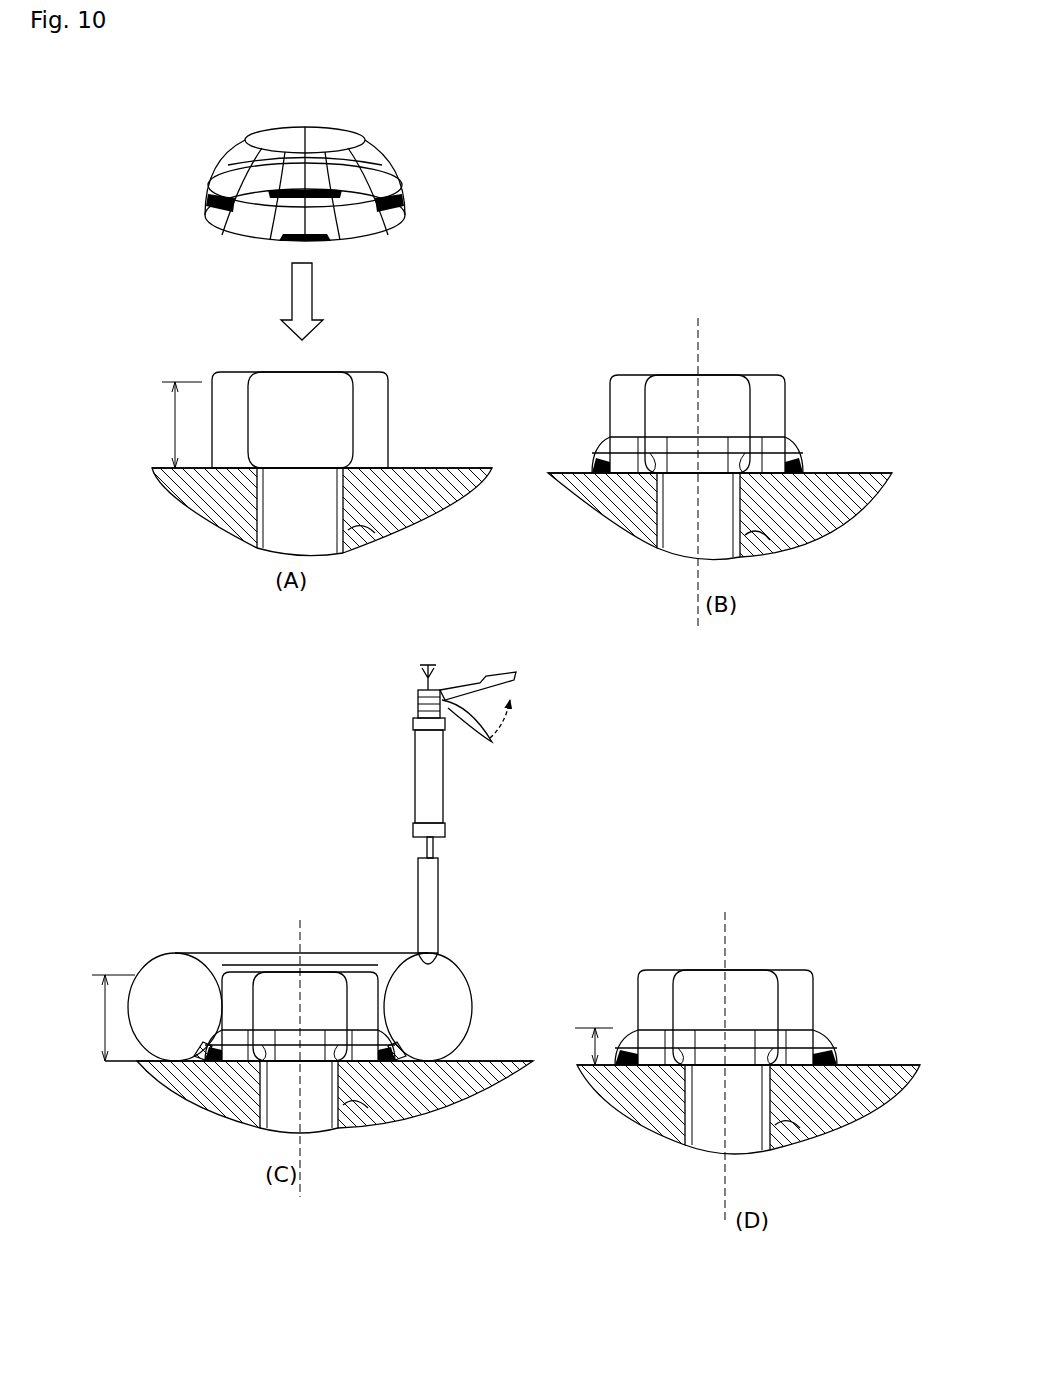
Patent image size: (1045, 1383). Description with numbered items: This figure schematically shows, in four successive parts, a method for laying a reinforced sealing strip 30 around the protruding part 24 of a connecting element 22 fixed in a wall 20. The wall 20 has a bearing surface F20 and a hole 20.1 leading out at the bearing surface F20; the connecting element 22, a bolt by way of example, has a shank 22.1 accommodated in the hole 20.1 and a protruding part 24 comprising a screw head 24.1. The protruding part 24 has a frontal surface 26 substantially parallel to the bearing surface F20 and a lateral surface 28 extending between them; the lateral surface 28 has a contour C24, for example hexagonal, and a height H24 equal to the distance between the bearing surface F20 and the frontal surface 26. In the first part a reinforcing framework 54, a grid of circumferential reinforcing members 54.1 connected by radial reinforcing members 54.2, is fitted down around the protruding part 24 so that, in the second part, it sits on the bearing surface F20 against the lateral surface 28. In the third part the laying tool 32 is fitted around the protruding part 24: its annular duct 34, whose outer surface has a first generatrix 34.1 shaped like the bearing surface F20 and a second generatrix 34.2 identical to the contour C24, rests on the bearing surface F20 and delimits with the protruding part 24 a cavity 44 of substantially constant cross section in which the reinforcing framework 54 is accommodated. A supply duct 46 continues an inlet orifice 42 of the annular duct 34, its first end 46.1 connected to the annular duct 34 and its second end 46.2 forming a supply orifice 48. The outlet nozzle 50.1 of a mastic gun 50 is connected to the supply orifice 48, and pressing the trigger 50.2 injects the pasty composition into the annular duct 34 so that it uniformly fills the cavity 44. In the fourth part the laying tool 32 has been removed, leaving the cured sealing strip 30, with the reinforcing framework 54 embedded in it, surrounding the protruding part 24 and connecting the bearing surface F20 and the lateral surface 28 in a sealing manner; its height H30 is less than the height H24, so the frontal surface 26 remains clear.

The wall 20 is at (413, 520).
The hole 20.1 is at (355, 530).
The connecting element 22 is at (268, 540).
The shank 22.1 is at (310, 522).
The protruding part 24 is at (383, 372).
The screw head 24.1 is at (220, 412).
The frontal surface 26 is at (230, 370).
The lateral surface 28 is at (212, 426).
The contour C24 is at (212, 398).
The height of the protruding part H24 is at (172, 430).
The height of the sealing strip H30 is at (576, 1046).
The bearing surface F20 is at (440, 466).
The sealing strip 30 is at (842, 1030).
The laying tool 32 is at (483, 852).
The annular duct 34 is at (140, 970).
The first generatrix 34.1 is at (175, 1062).
The second generatrix 34.2 is at (380, 1005).
The inlet orifice 42 is at (398, 953).
The cavity 44 is at (222, 1062).
The supply duct 46 is at (437, 898).
The first end 46.1 is at (440, 952).
The second end 46.2 is at (420, 860).
The supply orifice 48 is at (443, 853).
The mastic gun 50 is at (447, 777).
The outlet nozzle 50.1 is at (425, 855).
The trigger 50.2 is at (490, 742).
The reinforcing framework 54 is at (398, 152).
The circumferential reinforcing members 54.1 is at (215, 200).
The radial reinforcing members 54.2 is at (298, 233).